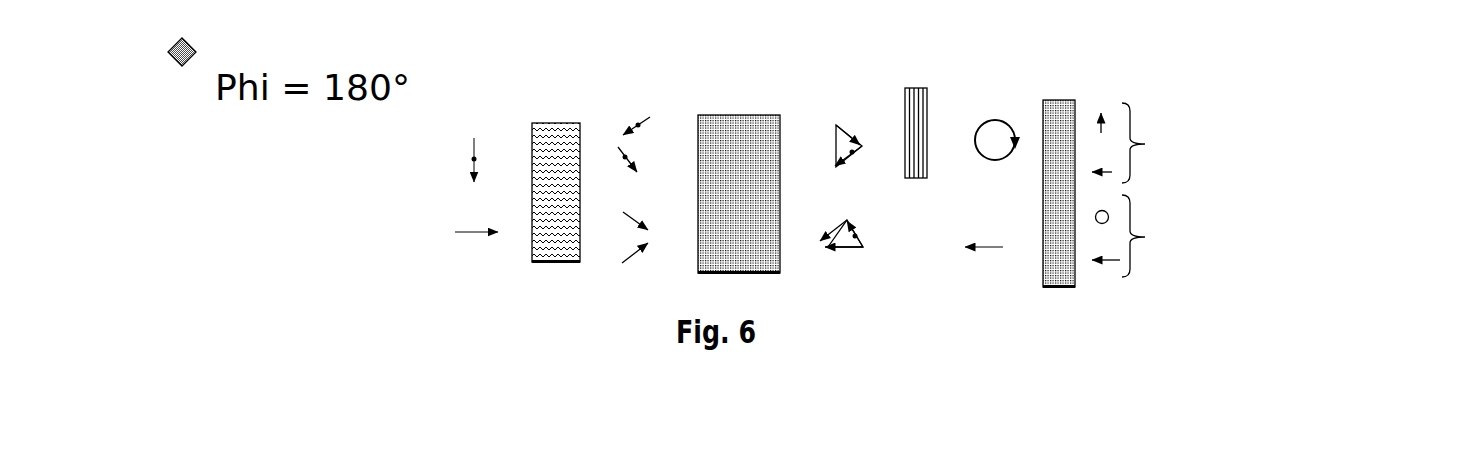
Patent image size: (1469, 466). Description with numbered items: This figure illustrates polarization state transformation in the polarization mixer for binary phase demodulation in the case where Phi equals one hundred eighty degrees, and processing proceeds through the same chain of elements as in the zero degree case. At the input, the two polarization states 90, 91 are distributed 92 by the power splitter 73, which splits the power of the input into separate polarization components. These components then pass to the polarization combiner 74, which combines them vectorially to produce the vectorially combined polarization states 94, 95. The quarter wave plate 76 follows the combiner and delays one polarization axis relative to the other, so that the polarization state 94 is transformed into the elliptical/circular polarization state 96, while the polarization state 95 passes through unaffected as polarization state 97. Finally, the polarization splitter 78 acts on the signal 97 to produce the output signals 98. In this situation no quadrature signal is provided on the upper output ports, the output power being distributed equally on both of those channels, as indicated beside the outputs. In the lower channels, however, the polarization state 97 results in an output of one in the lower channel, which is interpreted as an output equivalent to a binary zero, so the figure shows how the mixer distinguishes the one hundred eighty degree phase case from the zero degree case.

The power splitter 73 is at (553, 262).
The polarization combiner 74 is at (767, 273).
The quarter wave plate 76 is at (917, 178).
The polarization splitter 78 is at (1057, 287).
The polarization state 90 is at (474, 158).
The polarization state 91 is at (470, 232).
The distributed polarization states 92 is at (642, 267).
The vectorially combined polarization state 94 is at (835, 140).
The vectorially combined polarization state 95 is at (848, 248).
The elliptical/circular polarization state 96 is at (995, 120).
The unaffected polarization state 97 is at (990, 248).
The output signals 98 is at (1190, 103).